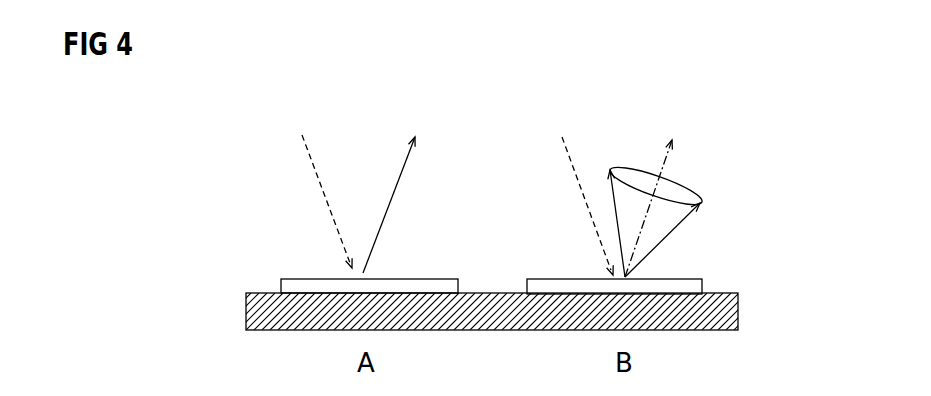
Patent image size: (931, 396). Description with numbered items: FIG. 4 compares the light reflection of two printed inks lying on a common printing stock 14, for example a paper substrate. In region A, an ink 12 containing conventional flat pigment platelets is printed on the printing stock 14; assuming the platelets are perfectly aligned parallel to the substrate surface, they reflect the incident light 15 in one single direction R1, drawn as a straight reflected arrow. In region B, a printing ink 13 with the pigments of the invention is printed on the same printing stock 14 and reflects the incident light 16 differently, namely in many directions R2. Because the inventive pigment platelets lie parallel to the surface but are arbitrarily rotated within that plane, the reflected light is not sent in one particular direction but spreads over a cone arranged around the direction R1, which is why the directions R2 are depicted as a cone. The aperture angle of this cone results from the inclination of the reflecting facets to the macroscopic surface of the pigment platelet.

The ink with conventional pigment platelets 12 is at (281, 290).
The printing ink according to the invention 13 is at (702, 283).
The printing stock 14 is at (738, 305).
The incident light 15 is at (320, 190).
The incident light 16 is at (587, 202).
The reflection direction R1 is at (397, 186).
The reflection directions R2 is at (671, 208).